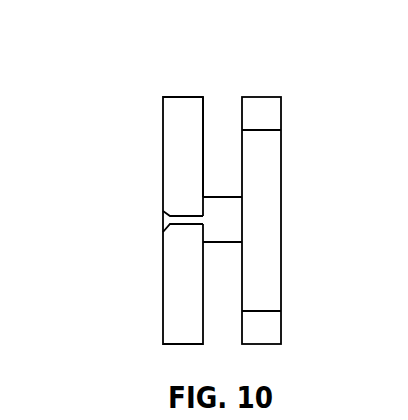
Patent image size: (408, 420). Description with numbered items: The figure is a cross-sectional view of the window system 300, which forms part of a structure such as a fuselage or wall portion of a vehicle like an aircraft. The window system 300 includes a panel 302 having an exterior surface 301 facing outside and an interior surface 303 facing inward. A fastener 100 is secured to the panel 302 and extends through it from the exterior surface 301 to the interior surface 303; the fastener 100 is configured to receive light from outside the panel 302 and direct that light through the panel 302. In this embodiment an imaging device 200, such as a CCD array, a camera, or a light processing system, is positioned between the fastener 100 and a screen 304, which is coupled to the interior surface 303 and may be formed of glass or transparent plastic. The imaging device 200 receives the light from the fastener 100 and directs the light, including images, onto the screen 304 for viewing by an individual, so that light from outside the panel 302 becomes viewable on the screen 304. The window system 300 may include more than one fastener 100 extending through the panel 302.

The window system 300 is at (152, 56).
The panel 302 is at (163, 97).
The exterior surface 301 is at (163, 293).
The fastener 100 is at (151, 216).
The interior surface 303 is at (203, 120).
The screen 304 is at (281, 220).
The imaging device 200 is at (225, 225).